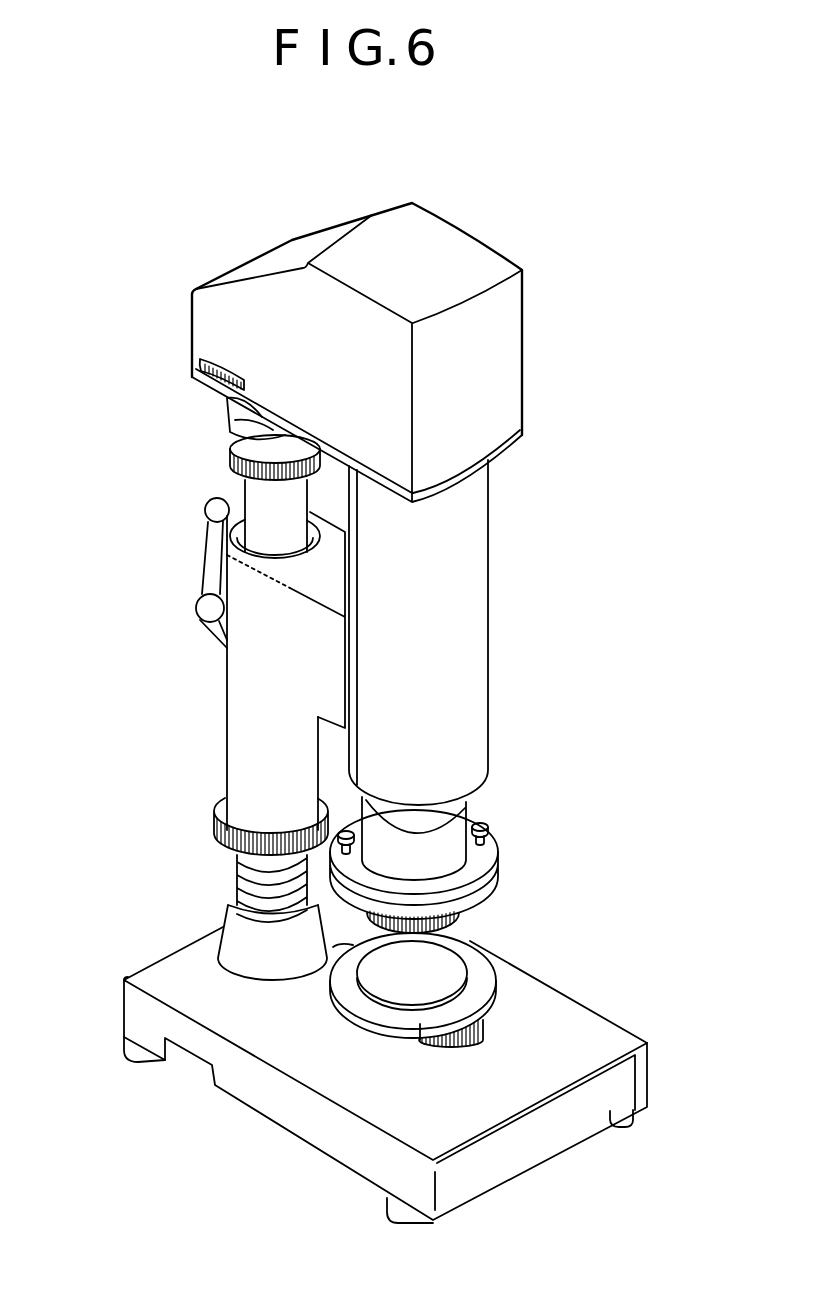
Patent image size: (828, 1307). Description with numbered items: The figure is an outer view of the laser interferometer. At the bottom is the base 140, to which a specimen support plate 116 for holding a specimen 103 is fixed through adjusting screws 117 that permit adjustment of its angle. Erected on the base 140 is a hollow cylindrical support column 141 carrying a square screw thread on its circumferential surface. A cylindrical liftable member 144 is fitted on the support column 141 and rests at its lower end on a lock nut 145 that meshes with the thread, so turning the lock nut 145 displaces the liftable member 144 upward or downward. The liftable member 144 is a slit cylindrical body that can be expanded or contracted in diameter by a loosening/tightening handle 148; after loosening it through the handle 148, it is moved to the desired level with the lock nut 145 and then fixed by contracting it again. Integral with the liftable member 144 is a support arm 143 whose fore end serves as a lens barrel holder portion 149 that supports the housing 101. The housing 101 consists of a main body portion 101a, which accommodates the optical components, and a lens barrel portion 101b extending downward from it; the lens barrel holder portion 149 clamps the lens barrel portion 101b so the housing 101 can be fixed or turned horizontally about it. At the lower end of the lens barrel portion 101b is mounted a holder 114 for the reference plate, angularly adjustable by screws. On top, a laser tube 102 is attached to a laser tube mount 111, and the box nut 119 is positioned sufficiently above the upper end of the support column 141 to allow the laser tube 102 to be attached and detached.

The housing 101 is at (526, 366).
The main body portion 101a is at (198, 327).
The lens barrel portion 101b is at (455, 812).
The laser tube 102 is at (243, 494).
The specimen 103 is at (462, 980).
The laser tube mount 111 is at (228, 406).
The holder 114 is at (493, 895).
The specimen support plate 116 is at (393, 1037).
The adjusting screws 117 is at (484, 1030).
The box nut 119 is at (230, 458).
The base 140 is at (283, 1123).
The support column 141 is at (237, 867).
The support arm 143 is at (245, 673).
The liftable member 144 is at (235, 748).
The lock nut 145 is at (220, 832).
The loosening/tightening handle 148 is at (203, 572).
The lens barrel holder portion 149 is at (472, 644).